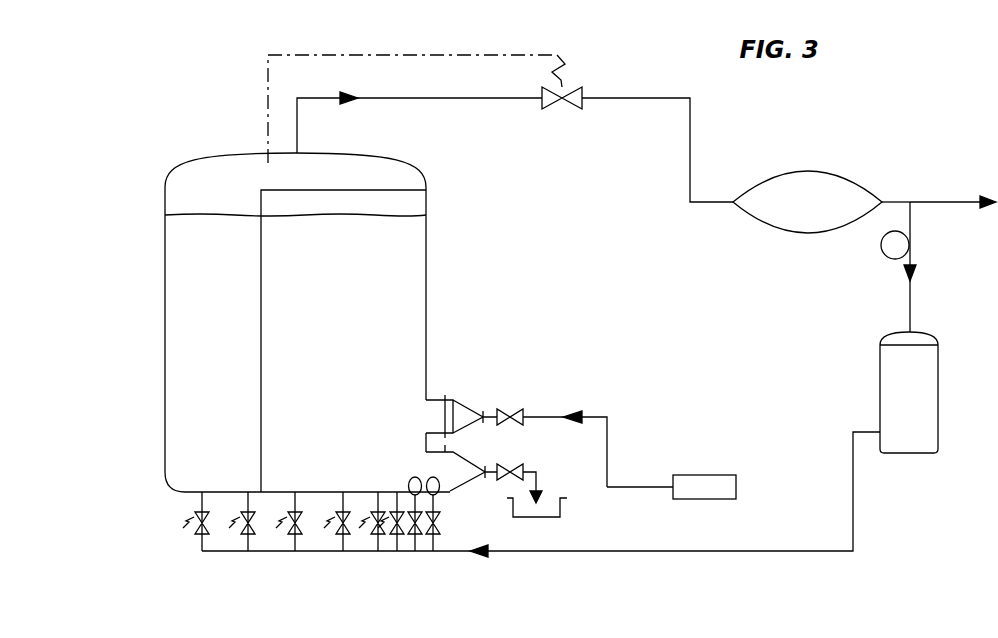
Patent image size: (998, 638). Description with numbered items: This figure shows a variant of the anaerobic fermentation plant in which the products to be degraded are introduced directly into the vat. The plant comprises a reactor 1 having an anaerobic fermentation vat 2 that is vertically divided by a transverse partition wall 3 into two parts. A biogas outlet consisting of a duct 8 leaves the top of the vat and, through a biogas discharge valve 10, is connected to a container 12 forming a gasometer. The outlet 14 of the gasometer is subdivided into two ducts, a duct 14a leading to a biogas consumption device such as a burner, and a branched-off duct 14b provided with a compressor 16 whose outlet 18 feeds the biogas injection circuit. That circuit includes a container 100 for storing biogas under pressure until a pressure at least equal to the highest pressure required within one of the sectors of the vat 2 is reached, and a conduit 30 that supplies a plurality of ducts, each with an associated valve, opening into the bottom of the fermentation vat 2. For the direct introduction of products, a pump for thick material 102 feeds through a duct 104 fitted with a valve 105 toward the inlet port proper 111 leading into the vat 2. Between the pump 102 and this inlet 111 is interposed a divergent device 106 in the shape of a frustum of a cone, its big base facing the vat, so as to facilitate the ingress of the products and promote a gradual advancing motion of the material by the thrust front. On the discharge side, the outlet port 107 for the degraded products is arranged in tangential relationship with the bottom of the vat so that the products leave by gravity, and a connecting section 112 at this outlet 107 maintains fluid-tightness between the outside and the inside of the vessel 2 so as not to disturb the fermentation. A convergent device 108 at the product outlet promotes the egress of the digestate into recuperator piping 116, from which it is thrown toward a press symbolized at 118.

The reactor 1 is at (158, 364).
The anaerobic fermentation vat 2 is at (217, 425).
The transverse partition wall 3 is at (413, 206).
The duct 8 is at (413, 98).
The biogas discharge valve 10 is at (585, 95).
The container 12 is at (807, 202).
The outlet 14 is at (895, 200).
The duct 14a is at (944, 197).
The branched-off duct 14b is at (912, 225).
The compressor 16 is at (895, 245).
The outlet 18 is at (913, 303).
The conduit 30 is at (505, 553).
The container 100 is at (909, 392).
The pump for thick material 102 is at (697, 475).
The duct 104 is at (583, 413).
The valve 105 is at (512, 409).
The divergent device 106 is at (462, 402).
The outlet port 107 is at (415, 496).
The convergent device 108 is at (458, 490).
The inlet port 111 is at (428, 412).
The connecting section 112 is at (435, 496).
The recuperator piping 116 is at (538, 476).
The press 118 is at (562, 510).